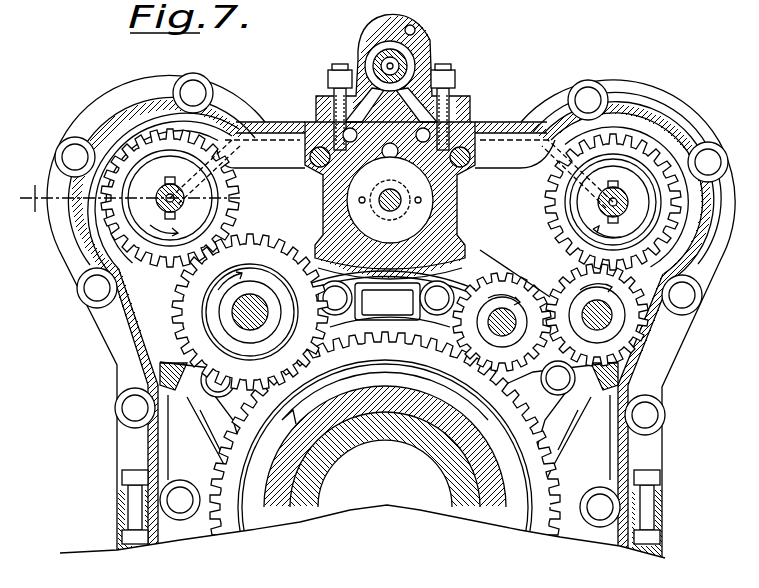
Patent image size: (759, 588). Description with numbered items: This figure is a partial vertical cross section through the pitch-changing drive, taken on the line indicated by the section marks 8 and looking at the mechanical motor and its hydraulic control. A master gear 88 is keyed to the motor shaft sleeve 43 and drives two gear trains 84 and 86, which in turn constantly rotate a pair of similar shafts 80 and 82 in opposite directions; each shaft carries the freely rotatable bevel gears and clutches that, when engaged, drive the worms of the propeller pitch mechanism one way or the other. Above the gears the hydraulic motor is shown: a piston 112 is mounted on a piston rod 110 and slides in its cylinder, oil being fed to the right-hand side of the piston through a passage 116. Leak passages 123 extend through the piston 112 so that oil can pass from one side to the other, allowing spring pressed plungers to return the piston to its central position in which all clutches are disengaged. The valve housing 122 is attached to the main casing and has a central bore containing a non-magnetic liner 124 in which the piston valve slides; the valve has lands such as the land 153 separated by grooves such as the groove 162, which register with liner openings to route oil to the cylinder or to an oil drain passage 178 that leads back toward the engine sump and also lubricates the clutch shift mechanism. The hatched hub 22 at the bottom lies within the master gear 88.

The section line 8- 8 is at (374, 144).
The crankshaft bearing 22 is at (428, 438).
The motor shaft sleeve 43 is at (333, 438).
The shaft 80 is at (187, 195).
The shaft 82 is at (598, 207).
The gear train 84 is at (232, 228).
The gear train 86 is at (578, 264).
The master gear 88 is at (234, 530).
The piston rod 110 is at (375, 208).
The piston 112 is at (412, 218).
The passage 116 is at (425, 135).
The valve housing 122 is at (360, 62).
The leak passages 123 is at (421, 201).
The non-magnetic liner 124 is at (413, 33).
The land 153 is at (402, 70).
The groove 162 is at (405, 88).
The oil drain passage 178 is at (422, 112).